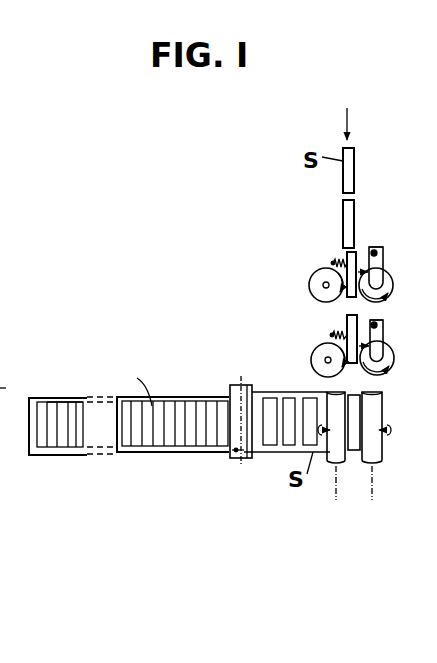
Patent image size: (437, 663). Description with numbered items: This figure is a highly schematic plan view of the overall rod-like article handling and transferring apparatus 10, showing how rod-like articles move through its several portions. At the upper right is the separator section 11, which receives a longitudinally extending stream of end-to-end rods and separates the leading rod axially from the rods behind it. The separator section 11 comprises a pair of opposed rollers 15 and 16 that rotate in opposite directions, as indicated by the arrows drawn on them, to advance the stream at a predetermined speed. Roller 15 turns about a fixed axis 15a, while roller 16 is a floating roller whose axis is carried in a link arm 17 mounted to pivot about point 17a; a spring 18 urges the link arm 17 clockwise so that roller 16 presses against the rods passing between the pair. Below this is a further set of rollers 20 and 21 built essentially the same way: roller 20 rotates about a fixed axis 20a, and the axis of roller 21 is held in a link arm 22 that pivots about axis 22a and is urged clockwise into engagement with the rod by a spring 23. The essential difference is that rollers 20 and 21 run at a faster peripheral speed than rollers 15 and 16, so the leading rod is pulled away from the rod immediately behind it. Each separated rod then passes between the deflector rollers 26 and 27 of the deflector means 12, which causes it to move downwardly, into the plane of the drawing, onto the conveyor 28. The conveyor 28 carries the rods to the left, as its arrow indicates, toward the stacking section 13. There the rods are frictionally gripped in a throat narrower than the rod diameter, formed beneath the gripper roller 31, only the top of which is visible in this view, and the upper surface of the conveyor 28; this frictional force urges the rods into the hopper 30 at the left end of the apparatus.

The rod-like article handling and transferring apparatus 10 is at (103, 464).
The separator section 11 is at (399, 229).
The deflector means 12 is at (358, 480).
The stacking section 13 is at (222, 458).
The roller 15 is at (318, 272).
The fixed axis 15a is at (323, 285).
The floating roller 16 is at (393, 279).
The link arm 17 is at (384, 262).
The pivot point 17a is at (382, 250).
The spring 18 is at (371, 248).
The roller 20 is at (318, 350).
The fixed axis 20a is at (325, 360).
The roller 21 is at (394, 350).
The link arm 22 is at (381, 327).
The pivot axis 22a is at (382, 320).
The spring 23 is at (333, 331).
The deflector roller 26 is at (382, 396).
The deflector roller 27 is at (327, 392).
The conveyor 28 is at (281, 452).
The hopper 30 is at (70, 408).
The gripper roller 31 is at (231, 390).